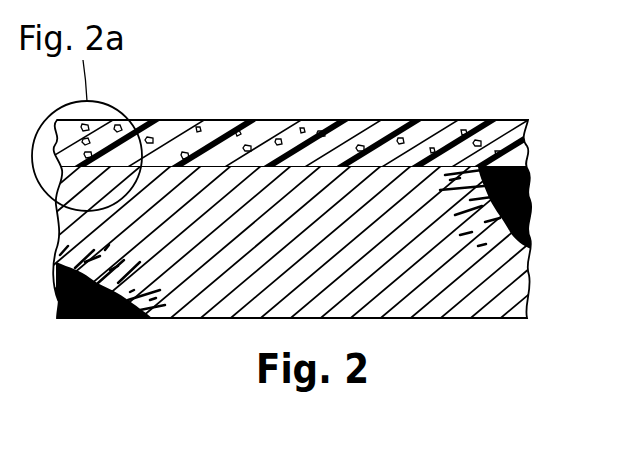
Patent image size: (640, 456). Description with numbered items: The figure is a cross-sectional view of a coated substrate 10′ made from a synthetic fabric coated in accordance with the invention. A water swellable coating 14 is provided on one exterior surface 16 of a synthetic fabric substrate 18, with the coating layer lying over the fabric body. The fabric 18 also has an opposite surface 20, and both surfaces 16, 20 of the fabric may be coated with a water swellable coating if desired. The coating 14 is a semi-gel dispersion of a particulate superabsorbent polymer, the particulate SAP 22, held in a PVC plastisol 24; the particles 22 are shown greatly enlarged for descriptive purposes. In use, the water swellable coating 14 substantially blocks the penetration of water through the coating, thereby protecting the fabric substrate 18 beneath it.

The coated substrate 10′ is at (436, 119).
The water swellable coating 14 is at (168, 118).
The exterior surface 16 is at (530, 178).
The synthetic fabric substrate 18 is at (518, 293).
The surface 20 is at (505, 318).
The particulate SAP 22 is at (247, 148).
The PVC plastisol 24 is at (283, 132).